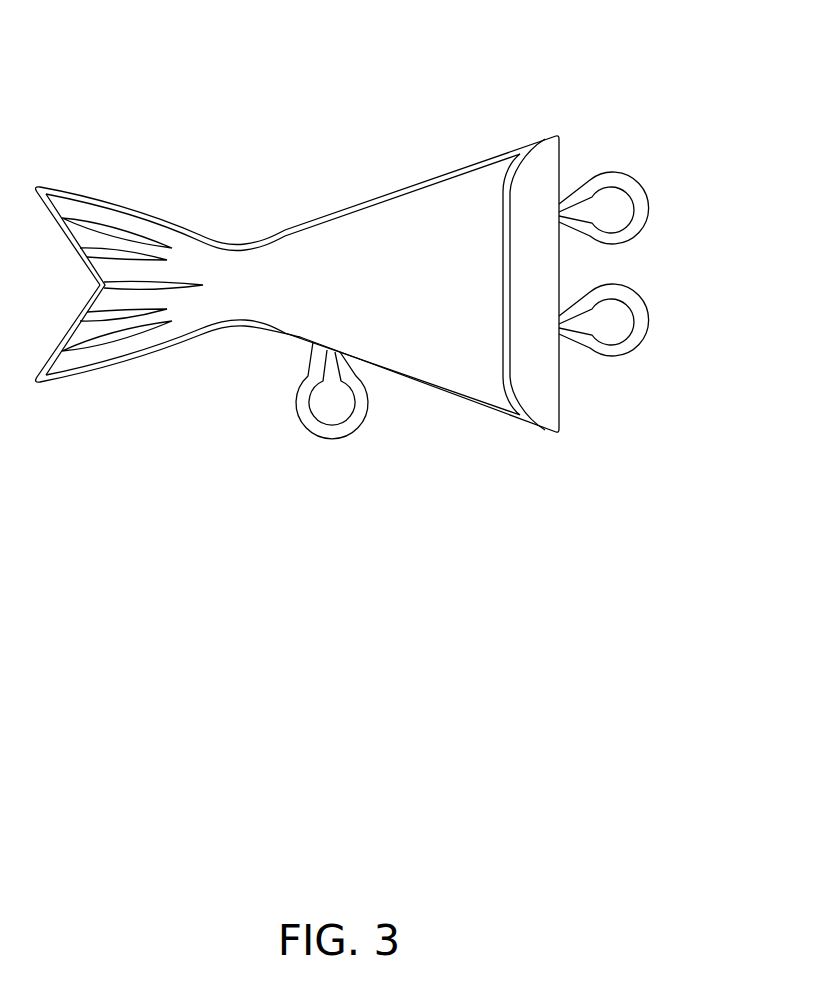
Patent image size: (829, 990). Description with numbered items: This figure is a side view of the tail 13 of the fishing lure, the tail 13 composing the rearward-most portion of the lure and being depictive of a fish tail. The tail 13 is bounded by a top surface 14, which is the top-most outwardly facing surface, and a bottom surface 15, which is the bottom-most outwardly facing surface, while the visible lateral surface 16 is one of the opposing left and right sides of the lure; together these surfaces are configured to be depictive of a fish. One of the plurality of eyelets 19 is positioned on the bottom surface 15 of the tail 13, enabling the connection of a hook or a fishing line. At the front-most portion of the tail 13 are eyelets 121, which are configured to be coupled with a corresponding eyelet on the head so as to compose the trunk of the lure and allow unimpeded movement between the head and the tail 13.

The tail 13 is at (682, 25).
The top surface 14 is at (497, 157).
The bottom surface 15 is at (279, 330).
The lateral surfaces 16 is at (396, 304).
The eyelets 19 is at (350, 426).
The eyelet 121 is at (640, 220).